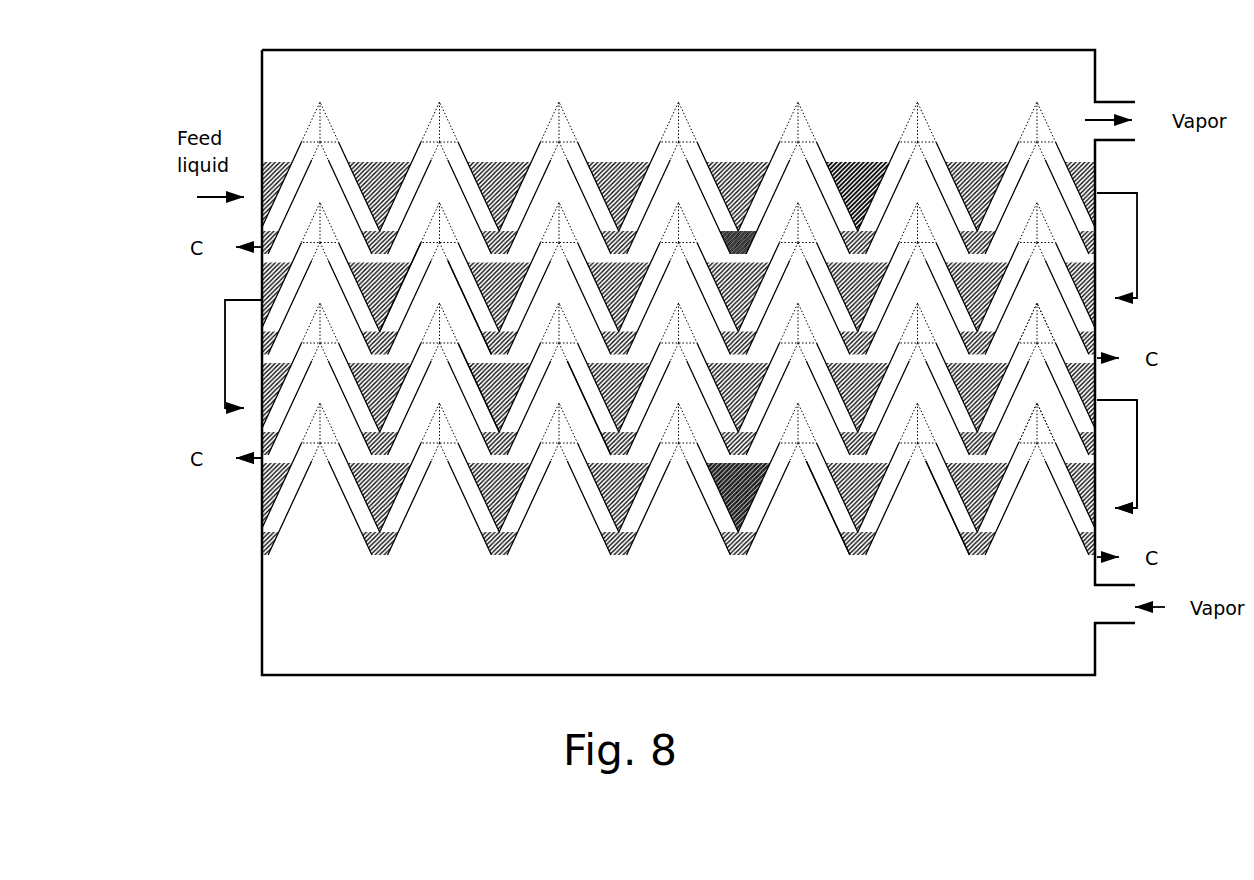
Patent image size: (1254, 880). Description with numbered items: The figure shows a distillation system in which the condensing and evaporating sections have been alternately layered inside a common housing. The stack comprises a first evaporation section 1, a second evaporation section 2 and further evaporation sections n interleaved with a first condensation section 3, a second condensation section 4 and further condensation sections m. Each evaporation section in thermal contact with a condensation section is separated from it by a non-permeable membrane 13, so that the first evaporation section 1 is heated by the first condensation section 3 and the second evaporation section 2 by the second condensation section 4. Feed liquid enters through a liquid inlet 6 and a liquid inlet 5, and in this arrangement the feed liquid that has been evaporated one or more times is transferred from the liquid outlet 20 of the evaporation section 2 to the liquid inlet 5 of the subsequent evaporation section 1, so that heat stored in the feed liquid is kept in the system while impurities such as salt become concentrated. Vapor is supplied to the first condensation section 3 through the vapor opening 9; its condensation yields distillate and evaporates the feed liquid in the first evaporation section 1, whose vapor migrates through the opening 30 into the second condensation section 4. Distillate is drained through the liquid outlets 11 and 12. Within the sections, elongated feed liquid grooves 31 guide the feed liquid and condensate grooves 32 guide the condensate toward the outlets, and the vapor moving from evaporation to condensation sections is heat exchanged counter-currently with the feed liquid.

The first evaporation section 1 is at (708, 460).
The second evaporation section 2 is at (472, 350).
The first condensation section 3 is at (835, 508).
The second condensation section 4 is at (600, 410).
The liquid inlet 5 is at (1100, 307).
The liquid inlet 6 is at (262, 410).
The vapor opening 9 is at (1038, 463).
The liquid outlet 11 is at (1100, 565).
The liquid outlet 12 is at (262, 465).
The non-permeable membrane 13 is at (955, 497).
The liquid outlet 20 is at (1100, 407).
The opening 30 is at (1035, 376).
The feed liquid grooves 31 is at (858, 178).
The condensate grooves 32 is at (738, 242).
The further evaporation section n is at (411, 250).
The further condensation section m is at (468, 287).